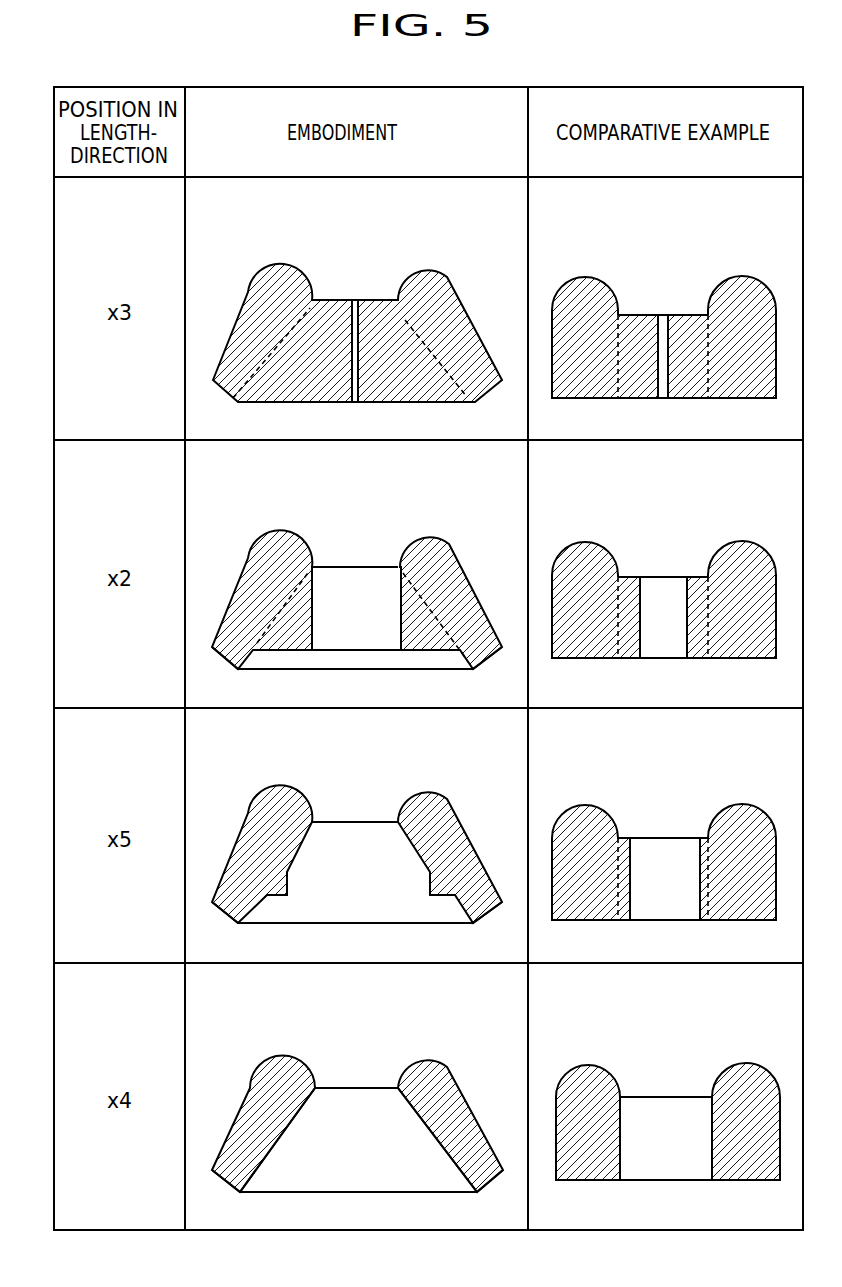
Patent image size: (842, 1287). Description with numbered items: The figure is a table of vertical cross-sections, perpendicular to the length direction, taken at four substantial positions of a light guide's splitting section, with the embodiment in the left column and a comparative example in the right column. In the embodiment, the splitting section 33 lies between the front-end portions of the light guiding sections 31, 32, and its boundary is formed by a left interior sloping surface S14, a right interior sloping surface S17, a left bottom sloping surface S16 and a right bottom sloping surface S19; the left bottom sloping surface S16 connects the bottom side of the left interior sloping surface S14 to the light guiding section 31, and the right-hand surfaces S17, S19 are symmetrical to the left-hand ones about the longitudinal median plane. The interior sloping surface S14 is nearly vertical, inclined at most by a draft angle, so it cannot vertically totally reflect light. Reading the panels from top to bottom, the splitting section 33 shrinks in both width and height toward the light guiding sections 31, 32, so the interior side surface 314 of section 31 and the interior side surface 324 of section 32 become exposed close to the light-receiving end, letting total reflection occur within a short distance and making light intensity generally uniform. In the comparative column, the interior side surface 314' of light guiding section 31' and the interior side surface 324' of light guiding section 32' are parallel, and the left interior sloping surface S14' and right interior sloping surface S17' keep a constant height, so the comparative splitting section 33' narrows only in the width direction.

The light guiding section 31 is at (357, 728).
The light guiding section 32 is at (450, 732).
The splitting section 33 is at (357, 706).
The left interior sloping surface S14 is at (356, 631).
The left bottom sloping surface S16 is at (281, 653).
The right interior sloping surface S17 is at (369, 668).
The right bottom sloping surface S19 is at (420, 653).
The interior side surface 314 is at (284, 1157).
The interior side surface 324 is at (432, 1157).
The light guiding section 31' is at (632, 700).
The light guiding section 32' is at (733, 700).
The splitting section 33' is at (663, 575).
The left interior sloping surface S14' is at (676, 638).
The right interior sloping surface S17' is at (655, 554).
The interior side surface 314' is at (657, 1159).
The interior side surface 324' is at (665, 1114).